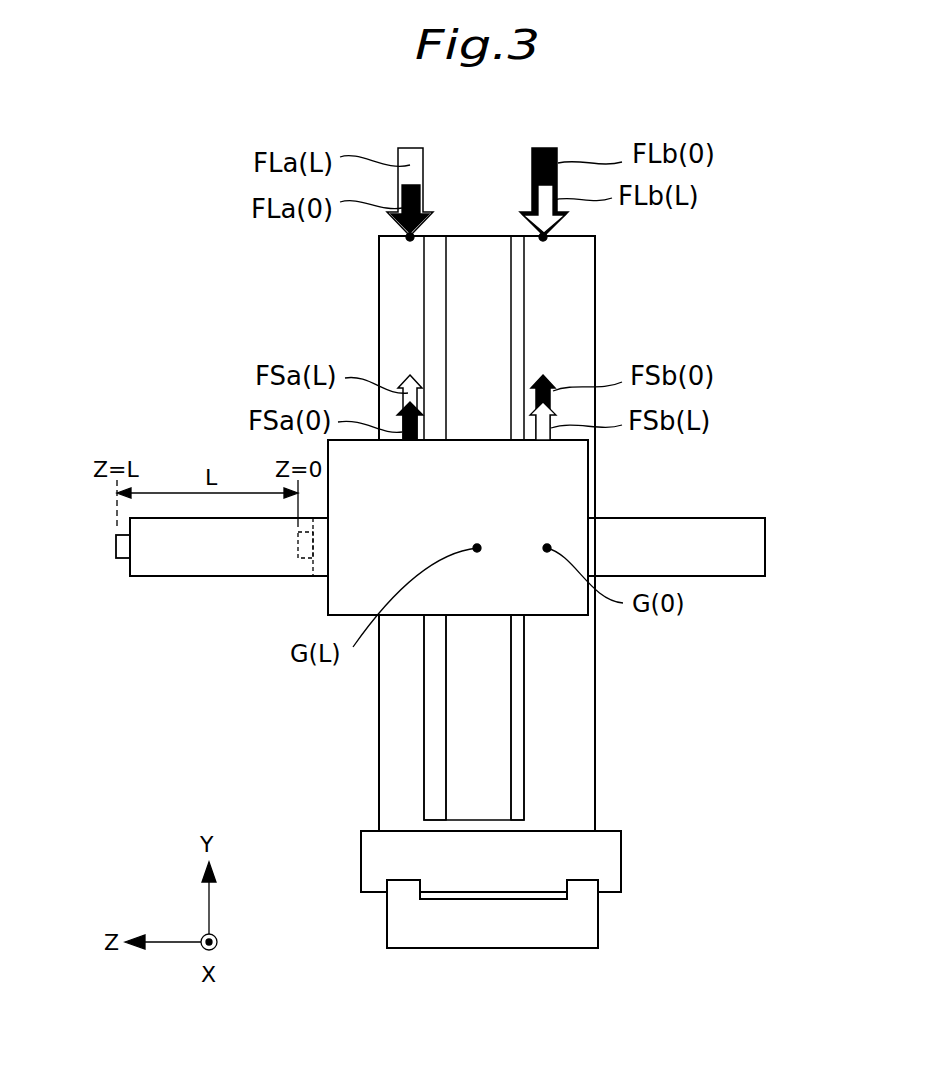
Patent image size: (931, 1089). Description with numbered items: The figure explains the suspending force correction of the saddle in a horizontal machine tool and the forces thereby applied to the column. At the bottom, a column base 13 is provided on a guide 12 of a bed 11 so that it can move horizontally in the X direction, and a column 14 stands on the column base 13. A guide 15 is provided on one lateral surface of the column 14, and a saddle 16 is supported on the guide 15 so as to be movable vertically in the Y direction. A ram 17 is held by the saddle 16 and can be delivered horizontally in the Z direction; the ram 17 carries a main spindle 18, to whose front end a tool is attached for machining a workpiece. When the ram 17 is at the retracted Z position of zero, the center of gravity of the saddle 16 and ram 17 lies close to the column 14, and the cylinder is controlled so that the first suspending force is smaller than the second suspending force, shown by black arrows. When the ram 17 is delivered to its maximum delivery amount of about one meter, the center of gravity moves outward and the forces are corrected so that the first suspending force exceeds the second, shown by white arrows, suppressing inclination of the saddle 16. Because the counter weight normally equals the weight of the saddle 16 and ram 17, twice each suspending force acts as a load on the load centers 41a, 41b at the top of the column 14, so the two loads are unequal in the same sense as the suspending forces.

The bed 11 is at (500, 933).
The guide 12 is at (405, 889).
The column base 13 is at (608, 853).
The column 14 is at (392, 698).
The guide 15 is at (422, 792).
The saddle 16 is at (567, 490).
The ram 17 is at (202, 565).
The main spindle 18 is at (123, 547).
The load center 41a is at (410, 237).
The load center 41b is at (543, 237).